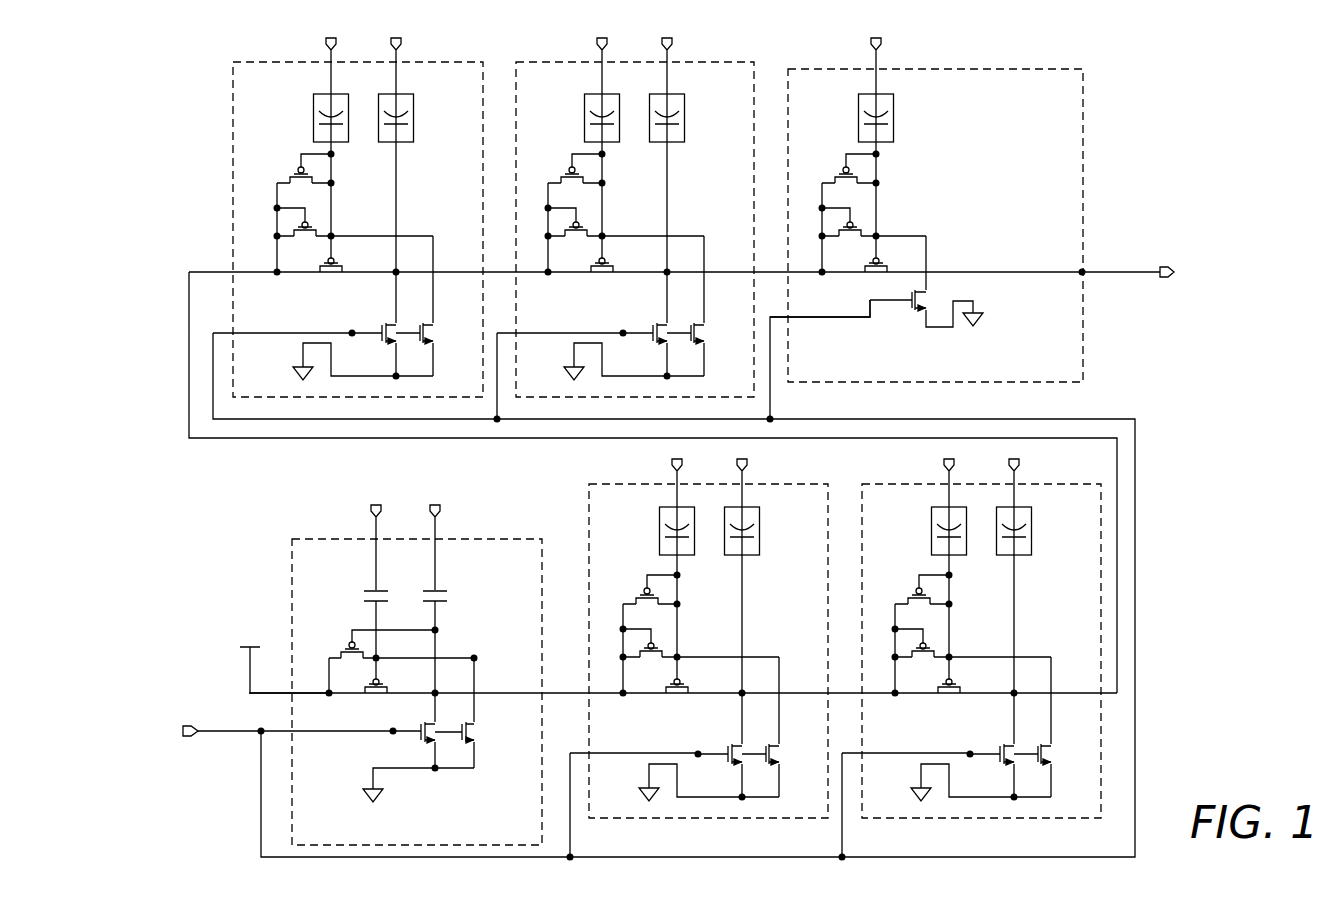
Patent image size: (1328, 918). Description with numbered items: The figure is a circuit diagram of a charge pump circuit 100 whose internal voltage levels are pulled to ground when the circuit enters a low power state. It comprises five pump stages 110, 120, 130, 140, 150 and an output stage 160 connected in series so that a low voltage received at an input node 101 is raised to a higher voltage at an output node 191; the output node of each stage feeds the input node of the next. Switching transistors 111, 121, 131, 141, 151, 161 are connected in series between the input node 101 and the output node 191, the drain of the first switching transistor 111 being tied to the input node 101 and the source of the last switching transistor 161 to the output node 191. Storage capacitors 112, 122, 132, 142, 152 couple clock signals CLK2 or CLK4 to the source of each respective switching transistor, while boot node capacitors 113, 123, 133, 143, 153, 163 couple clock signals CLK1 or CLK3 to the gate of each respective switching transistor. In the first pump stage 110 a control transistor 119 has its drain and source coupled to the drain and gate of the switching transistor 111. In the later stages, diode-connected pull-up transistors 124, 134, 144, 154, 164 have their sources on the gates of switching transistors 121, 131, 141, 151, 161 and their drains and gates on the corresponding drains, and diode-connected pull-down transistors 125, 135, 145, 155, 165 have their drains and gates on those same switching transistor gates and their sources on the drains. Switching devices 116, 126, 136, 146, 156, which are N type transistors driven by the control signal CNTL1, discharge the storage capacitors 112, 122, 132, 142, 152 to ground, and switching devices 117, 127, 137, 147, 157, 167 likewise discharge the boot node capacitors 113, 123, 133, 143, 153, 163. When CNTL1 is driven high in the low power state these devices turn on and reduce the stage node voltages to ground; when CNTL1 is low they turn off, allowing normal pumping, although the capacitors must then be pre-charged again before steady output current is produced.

The charge pump circuit 100 is at (1137, 97).
The input node 101 is at (329, 697).
The first pump stage 110 is at (542, 539).
The switching transistor 111 is at (370, 698).
The storage capacitor 112 is at (447, 596).
The boot node capacitor 113 is at (364, 596).
The switching device 116 is at (420, 748).
The switching device 117 is at (475, 743).
The control transistor 119 is at (348, 647).
The second pump stage 120 is at (721, 637).
The switching transistor 121 is at (650, 702).
The storage capacitor 122 is at (768, 531).
The boot node capacitor 123 is at (647, 531).
The pull-up transistor 124 is at (701, 642).
The pull-down transistor 125 is at (672, 590).
The switching device 126 is at (715, 770).
The switching device 127 is at (780, 764).
The third pump stage 130 is at (1026, 651).
The switching transistor 131 is at (922, 702).
The storage capacitor 132 is at (1040, 531).
The boot node capacitor 133 is at (918, 531).
The pull-up transistor 134 is at (973, 642).
The pull-down transistor 135 is at (944, 590).
The switching device 136 is at (987, 770).
The switching device 137 is at (1052, 764).
The fourth pump stage 140 is at (233, 68).
The switching transistor 141 is at (318, 276).
The storage capacitor 142 is at (414, 116).
The boot node capacitor 143 is at (313, 116).
The pull-up transistor 144 is at (319, 216).
The pull-down transistor 145 is at (319, 172).
The switching device 146 is at (376, 344).
The switching device 147 is at (433, 333).
The fifth pump stage 150 is at (646, 219).
The switching transistor 151 is at (575, 281).
The storage capacitor 152 is at (692, 118).
The boot node capacitor 153 is at (573, 118).
The pull-up transistor 154 is at (626, 221).
The pull-down transistor 155 is at (597, 169).
The switching device 156 is at (640, 349).
The switching device 157 is at (705, 343).
The output stage 160 is at (935, 214).
The switching transistor 161 is at (851, 281).
The boot node capacitor 163 is at (902, 118).
The pull-up transistor 164 is at (878, 221).
The pull-down transistor 165 is at (878, 169).
The switching device 167 is at (848, 320).
The output node 191 is at (1085, 270).